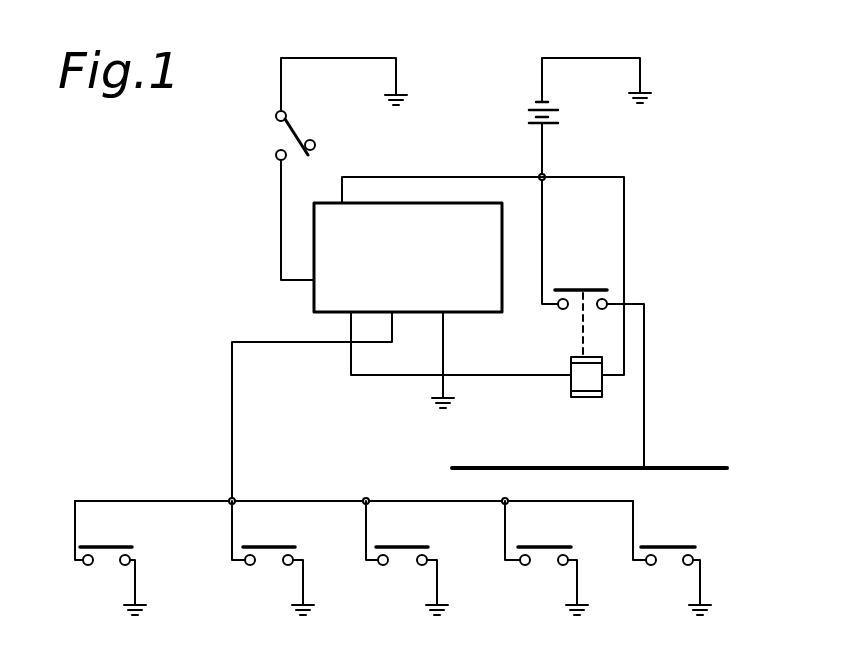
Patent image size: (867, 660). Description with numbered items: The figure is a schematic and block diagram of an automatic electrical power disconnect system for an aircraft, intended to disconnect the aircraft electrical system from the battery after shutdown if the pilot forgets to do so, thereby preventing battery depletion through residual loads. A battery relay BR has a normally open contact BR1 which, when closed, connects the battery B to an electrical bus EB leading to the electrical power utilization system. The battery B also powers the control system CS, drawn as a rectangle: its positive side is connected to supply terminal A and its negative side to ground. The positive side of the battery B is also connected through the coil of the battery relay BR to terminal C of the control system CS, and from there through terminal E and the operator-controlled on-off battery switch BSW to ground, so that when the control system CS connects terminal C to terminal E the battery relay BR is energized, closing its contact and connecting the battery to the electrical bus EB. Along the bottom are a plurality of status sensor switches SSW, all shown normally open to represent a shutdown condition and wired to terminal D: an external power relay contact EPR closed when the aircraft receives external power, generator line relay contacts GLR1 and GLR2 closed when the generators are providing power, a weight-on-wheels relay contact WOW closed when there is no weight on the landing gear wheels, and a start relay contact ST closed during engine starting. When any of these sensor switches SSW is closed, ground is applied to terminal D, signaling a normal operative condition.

The operator-controlled on-off battery switch BSW is at (298, 121).
The battery B is at (520, 112).
The control system CS is at (426, 264).
The normally open contact BR1 is at (600, 262).
The battery relay BR is at (576, 366).
The electrical bus EB is at (570, 437).
The status sensor switches SSW is at (52, 554).
The external power relay contact EPR is at (150, 530).
The generator line relay contact GLR1 is at (313, 528).
The generator line relay contact GLR2 is at (450, 528).
The weight-on-wheels relay contact WOW is at (590, 530).
The start relay contact ST is at (704, 524).